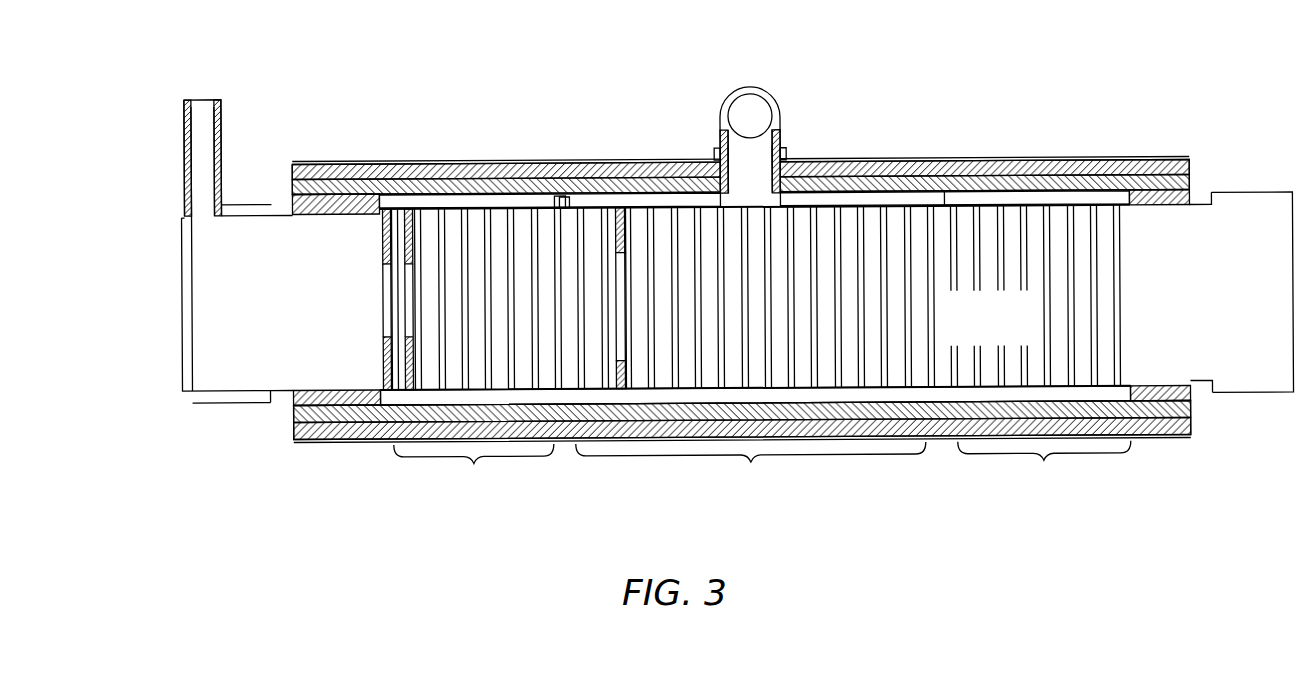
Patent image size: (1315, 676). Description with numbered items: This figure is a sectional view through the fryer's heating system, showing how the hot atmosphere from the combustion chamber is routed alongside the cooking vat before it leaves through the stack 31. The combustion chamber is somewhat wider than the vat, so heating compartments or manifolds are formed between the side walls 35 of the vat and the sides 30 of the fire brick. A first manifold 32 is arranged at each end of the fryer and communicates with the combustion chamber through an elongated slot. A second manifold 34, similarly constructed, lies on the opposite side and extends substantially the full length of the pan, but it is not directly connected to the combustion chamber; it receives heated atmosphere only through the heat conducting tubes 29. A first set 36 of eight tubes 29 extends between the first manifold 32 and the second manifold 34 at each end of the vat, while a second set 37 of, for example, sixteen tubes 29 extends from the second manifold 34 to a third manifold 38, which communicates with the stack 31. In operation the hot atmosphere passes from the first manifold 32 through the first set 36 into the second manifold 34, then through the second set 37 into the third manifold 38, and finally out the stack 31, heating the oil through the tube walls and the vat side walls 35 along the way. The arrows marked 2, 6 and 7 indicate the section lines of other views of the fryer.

The heat conducting tubes 29 is at (1117, 313).
The sides of the combustion chamber 30 is at (984, 193).
The stack 31 is at (772, 97).
The first manifold 32 is at (457, 205).
The second manifold 34 is at (812, 397).
The side walls of the vat 35 is at (597, 205).
The first set of heat conducting tubes 36 is at (762, 468).
The second set of conducting tubes 37 is at (751, 466).
The third manifold 38 is at (765, 187).
The section line 2 is at (1027, 345).
The section line 6 is at (387, 157).
The section line 7 is at (207, 55).